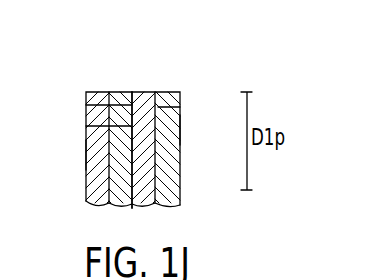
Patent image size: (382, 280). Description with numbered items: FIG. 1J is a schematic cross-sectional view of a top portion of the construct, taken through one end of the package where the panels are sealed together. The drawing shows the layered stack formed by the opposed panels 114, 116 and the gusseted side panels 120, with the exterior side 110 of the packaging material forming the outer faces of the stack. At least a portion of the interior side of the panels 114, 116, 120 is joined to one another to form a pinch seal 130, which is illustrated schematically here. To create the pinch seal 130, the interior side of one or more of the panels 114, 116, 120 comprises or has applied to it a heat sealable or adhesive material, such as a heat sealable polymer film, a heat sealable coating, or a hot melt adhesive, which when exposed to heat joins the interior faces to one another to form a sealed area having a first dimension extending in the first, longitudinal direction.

The exterior side 110 is at (86, 183).
The opposed panel 114 is at (86, 155).
The opposed panel 116 is at (180, 130).
The gusseted side panel 120 is at (115, 91).
The pinch seal 130 is at (86, 105).